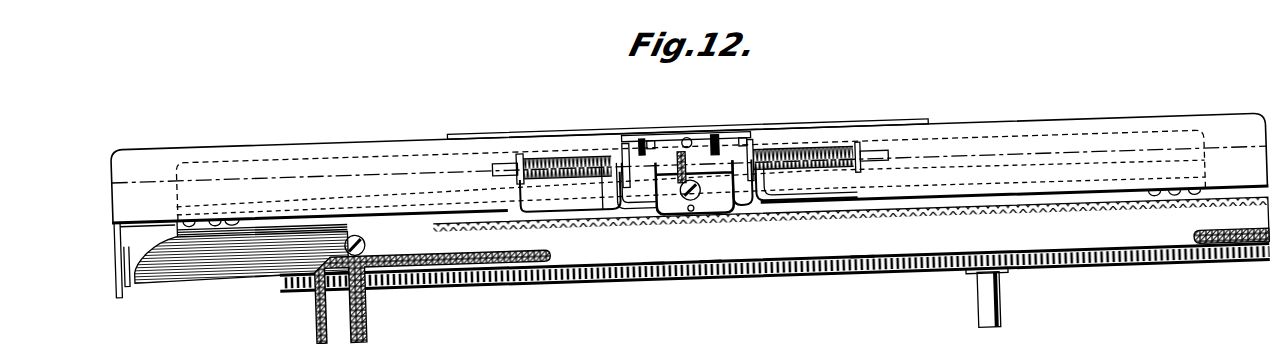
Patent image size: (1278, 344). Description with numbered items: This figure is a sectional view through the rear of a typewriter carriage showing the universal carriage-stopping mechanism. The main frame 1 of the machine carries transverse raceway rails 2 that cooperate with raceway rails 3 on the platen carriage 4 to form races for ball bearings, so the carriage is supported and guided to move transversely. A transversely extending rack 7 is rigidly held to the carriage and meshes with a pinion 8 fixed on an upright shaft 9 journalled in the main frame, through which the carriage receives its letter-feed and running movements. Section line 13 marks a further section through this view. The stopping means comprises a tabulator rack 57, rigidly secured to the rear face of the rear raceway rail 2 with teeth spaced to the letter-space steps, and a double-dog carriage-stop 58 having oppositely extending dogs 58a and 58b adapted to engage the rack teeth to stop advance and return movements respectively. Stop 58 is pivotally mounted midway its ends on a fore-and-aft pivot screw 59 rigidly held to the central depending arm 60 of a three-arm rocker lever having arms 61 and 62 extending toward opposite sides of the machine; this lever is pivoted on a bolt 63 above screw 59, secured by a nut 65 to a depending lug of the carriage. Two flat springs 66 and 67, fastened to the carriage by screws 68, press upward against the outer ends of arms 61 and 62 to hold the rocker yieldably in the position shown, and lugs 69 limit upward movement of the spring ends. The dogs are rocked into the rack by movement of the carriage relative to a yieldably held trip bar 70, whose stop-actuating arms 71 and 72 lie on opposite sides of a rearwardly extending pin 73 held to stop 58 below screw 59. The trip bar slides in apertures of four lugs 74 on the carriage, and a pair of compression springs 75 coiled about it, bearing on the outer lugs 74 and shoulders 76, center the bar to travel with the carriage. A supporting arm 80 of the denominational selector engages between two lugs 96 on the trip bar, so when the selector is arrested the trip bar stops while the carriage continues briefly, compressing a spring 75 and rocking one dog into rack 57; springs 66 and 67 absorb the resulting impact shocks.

The main frame 1 is at (342, 330).
The raceway rail 2 is at (1096, 208).
The raceway rail 3 is at (226, 262).
The platen carriage 4 is at (255, 150).
The rack 7 is at (606, 280).
The pinion 8 is at (970, 274).
The upright shaft 9 is at (1001, 300).
The section line 13 is at (161, 173).
The tabulator rack 57 is at (852, 270).
The double-dog carriage-stop 58 is at (793, 135).
The dog 58a is at (745, 213).
The dog 58b is at (660, 212).
The pivot screw 59 is at (683, 215).
The central depending arm 60 is at (648, 195).
The arm 61 is at (775, 178).
The arm 62 is at (637, 150).
The bolt 63 is at (700, 140).
The nut 65 is at (720, 145).
The flat spring 66 is at (955, 158).
The flat spring 67 is at (388, 190).
The screw 68 is at (240, 225).
The lug 69 is at (848, 122).
The trip bar 70 is at (502, 168).
The stop-actuating arm 71 is at (697, 212).
The stop-actuating arm 72 is at (643, 268).
The pin 73 is at (700, 270).
The lug 74 is at (868, 110).
The compression spring 75 is at (525, 163).
The shoulder 76 is at (612, 180).
The supporting arm 80 is at (690, 138).
The lug 96 is at (650, 145).